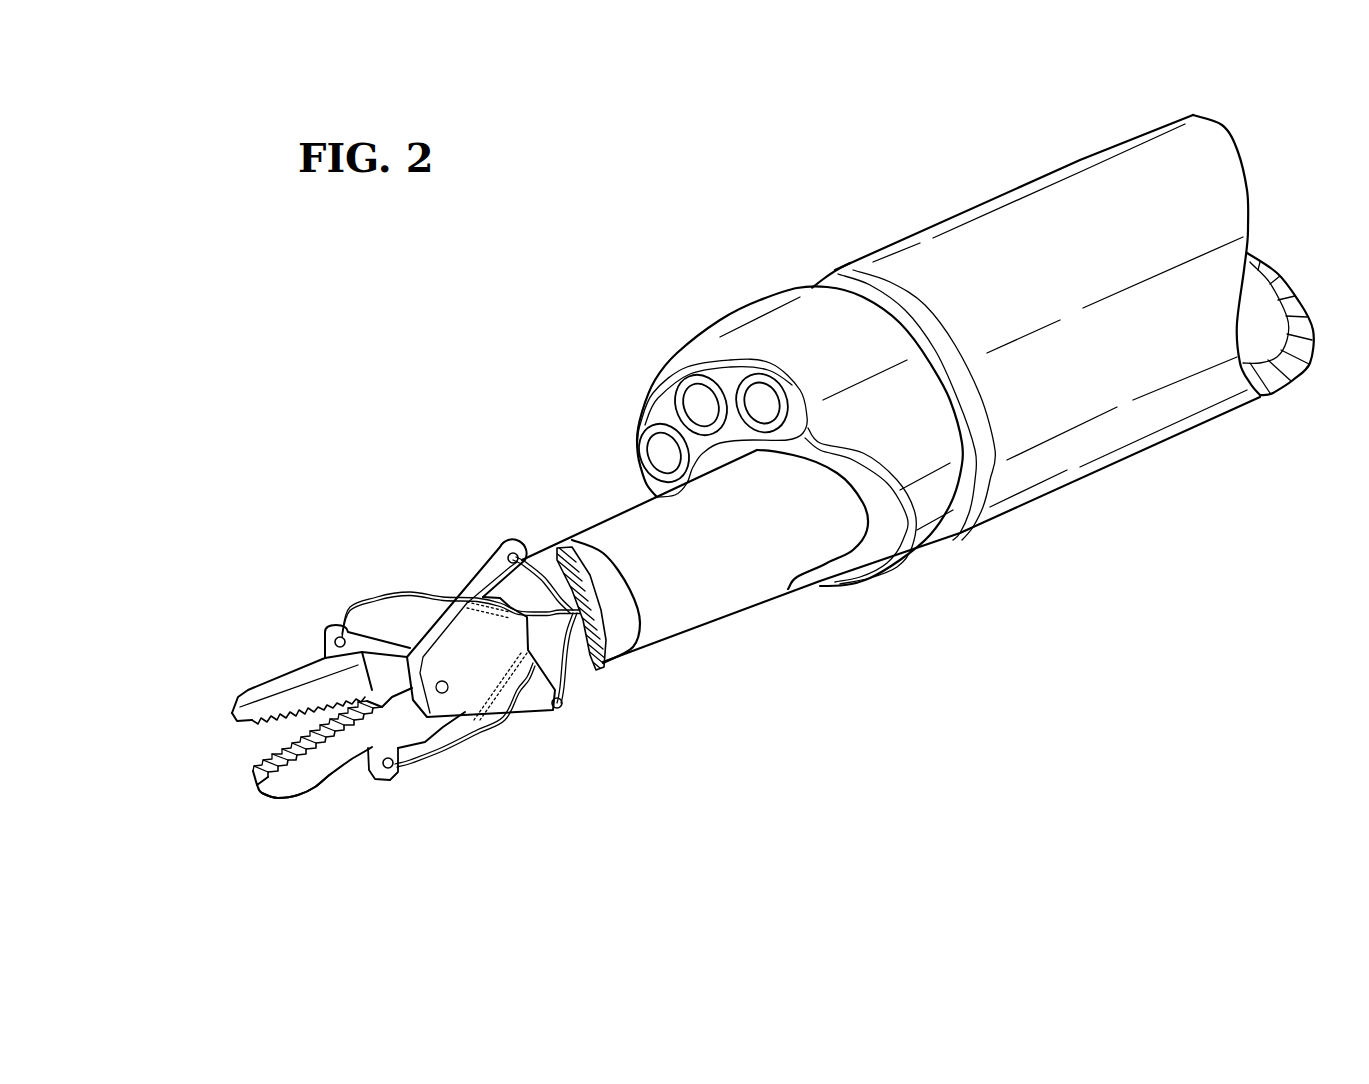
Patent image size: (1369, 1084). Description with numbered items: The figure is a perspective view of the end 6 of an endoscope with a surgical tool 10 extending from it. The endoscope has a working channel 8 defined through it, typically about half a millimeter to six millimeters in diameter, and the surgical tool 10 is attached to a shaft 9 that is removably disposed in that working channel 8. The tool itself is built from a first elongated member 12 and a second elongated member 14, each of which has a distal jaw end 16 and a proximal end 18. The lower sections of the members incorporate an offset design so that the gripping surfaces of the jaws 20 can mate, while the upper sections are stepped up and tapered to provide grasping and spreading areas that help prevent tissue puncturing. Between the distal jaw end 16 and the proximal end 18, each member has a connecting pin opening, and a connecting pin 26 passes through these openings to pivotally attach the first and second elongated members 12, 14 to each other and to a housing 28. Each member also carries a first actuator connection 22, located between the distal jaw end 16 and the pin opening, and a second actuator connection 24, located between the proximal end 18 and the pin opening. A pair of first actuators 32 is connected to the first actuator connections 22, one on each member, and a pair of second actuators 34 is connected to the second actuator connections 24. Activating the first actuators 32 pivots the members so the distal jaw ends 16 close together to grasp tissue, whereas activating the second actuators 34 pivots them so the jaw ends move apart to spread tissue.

The end 6 is at (1053, 168).
The working channel 8 is at (950, 423).
The shaft 9 is at (788, 563).
The surgical tool 10 is at (243, 517).
The first elongated member 12 is at (330, 793).
The second elongated member 14 is at (385, 605).
The distal jaw end 16 is at (230, 703).
The proximal end 18 is at (511, 553).
The gripping surfaces of the jaws 20 is at (273, 720).
The first actuator connection 22 is at (327, 640).
The second actuator connection 24 is at (513, 553).
The connecting pin 26 is at (450, 683).
The housing 28 is at (518, 671).
The first actuators 32 is at (417, 595).
The second actuators 34 is at (543, 553).